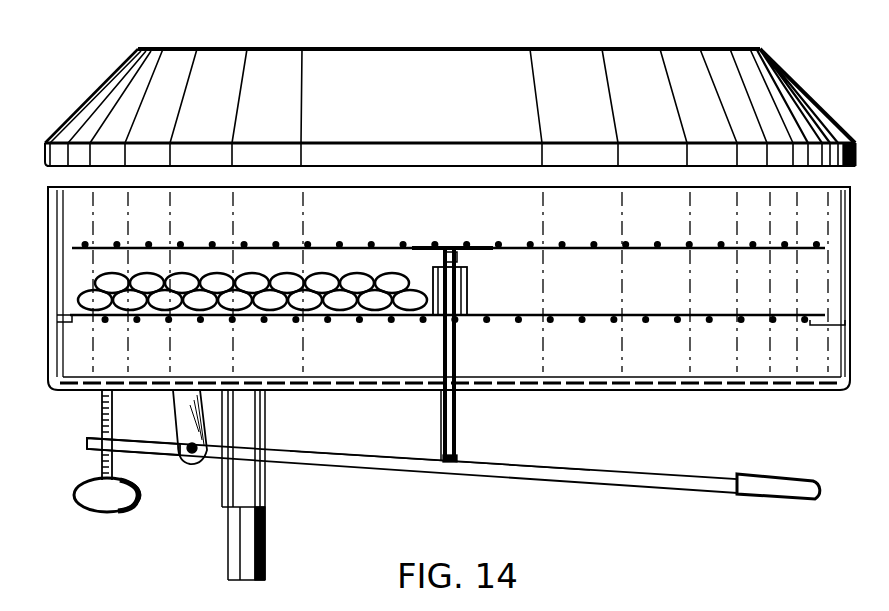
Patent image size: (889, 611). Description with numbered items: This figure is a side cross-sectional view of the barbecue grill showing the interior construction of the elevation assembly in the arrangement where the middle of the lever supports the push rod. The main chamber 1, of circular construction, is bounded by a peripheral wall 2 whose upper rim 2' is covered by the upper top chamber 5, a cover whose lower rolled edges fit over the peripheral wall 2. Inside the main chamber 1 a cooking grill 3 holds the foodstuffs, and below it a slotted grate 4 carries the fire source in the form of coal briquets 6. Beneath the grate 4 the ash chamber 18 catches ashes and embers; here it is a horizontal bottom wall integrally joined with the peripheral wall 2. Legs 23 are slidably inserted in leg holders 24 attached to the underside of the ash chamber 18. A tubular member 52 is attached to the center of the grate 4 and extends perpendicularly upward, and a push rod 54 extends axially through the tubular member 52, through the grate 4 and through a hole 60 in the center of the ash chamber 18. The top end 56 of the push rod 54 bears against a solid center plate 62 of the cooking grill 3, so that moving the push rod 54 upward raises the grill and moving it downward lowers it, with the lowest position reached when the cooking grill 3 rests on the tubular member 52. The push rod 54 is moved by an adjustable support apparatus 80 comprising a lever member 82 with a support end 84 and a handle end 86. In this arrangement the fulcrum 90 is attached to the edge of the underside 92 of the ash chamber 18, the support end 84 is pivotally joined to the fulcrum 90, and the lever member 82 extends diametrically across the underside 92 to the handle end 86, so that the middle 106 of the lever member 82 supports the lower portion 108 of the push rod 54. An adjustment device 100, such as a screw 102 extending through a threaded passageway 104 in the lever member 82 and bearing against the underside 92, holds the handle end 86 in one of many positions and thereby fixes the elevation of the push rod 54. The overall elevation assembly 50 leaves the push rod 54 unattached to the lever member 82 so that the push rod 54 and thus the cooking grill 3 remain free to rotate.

The main chamber 1 is at (712, 194).
The peripheral wall 2 is at (462, 283).
The upper rim 2' is at (458, 181).
The cooking grill 3 is at (640, 247).
The slotted grate 4 is at (628, 314).
The upper top chamber 5 is at (793, 71).
The coal briquets 6 is at (248, 282).
The ash chamber 18 is at (755, 391).
The legs 23 is at (264, 543).
The leg holders 24 is at (247, 400).
The lever assembly 50 is at (433, 476).
The tubular member 52 is at (468, 291).
The push rod 54 is at (443, 404).
The top end of push rod 56 is at (462, 258).
The hole 60 is at (465, 392).
The solid center plate 62 is at (464, 247).
The adjustable support apparatus 80 is at (170, 473).
The lever member 82 is at (638, 489).
The support end 84 is at (95, 438).
The handle end 86 is at (790, 498).
The fulcrum 90 is at (187, 478).
The underside of ash chamber 92 is at (610, 391).
The adjustment device 100 is at (94, 471).
The screw 102 is at (68, 476).
The threaded passageway 104 is at (115, 453).
The middle of lever member 106 is at (490, 477).
The lower portion of push rod 108 is at (462, 452).